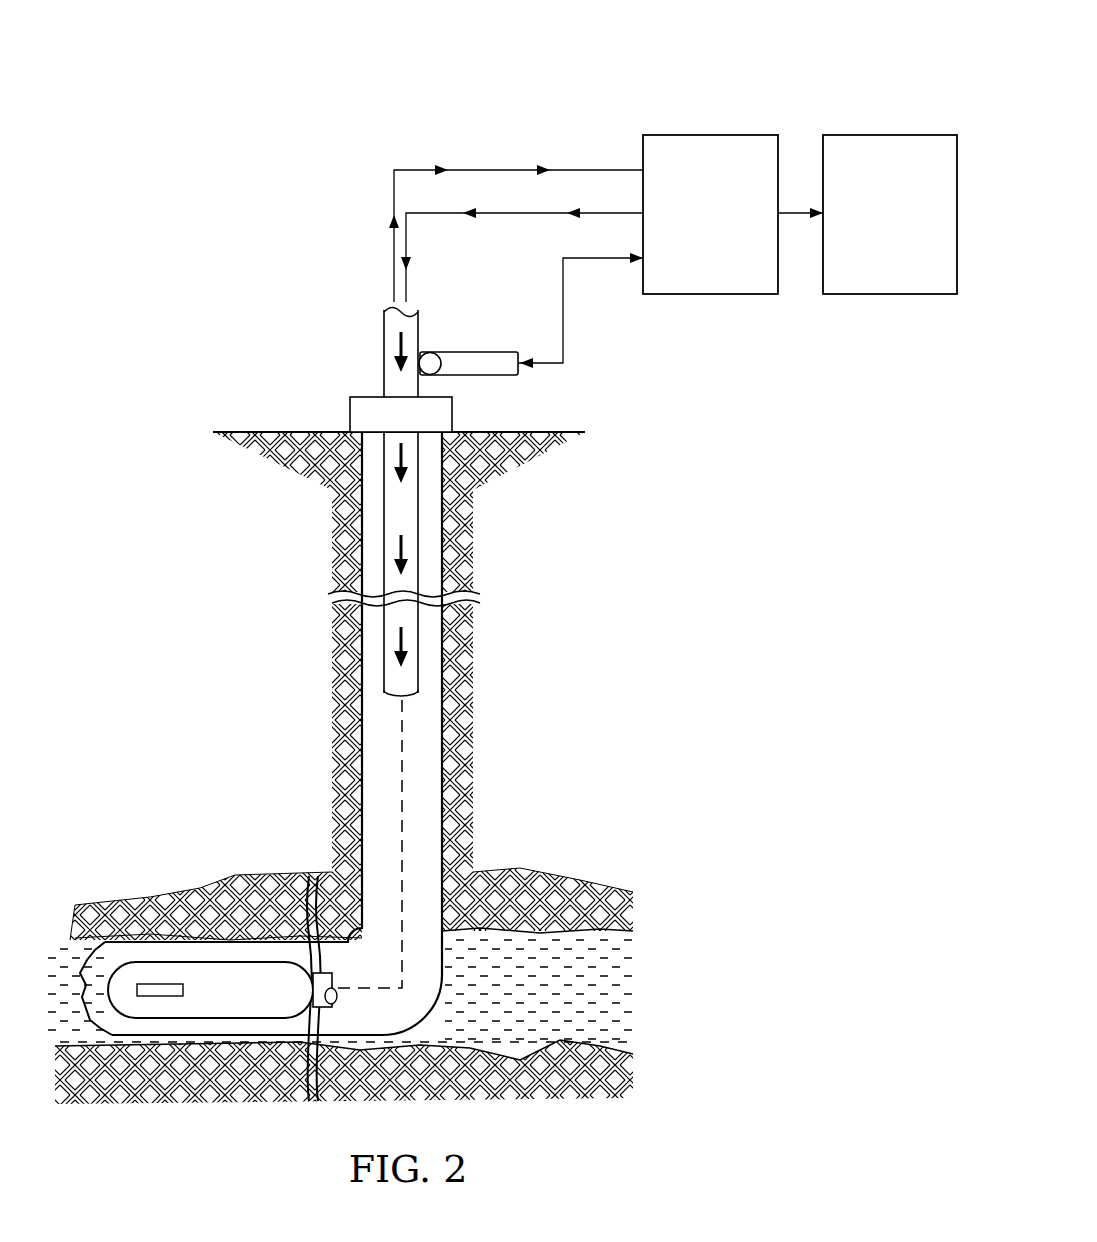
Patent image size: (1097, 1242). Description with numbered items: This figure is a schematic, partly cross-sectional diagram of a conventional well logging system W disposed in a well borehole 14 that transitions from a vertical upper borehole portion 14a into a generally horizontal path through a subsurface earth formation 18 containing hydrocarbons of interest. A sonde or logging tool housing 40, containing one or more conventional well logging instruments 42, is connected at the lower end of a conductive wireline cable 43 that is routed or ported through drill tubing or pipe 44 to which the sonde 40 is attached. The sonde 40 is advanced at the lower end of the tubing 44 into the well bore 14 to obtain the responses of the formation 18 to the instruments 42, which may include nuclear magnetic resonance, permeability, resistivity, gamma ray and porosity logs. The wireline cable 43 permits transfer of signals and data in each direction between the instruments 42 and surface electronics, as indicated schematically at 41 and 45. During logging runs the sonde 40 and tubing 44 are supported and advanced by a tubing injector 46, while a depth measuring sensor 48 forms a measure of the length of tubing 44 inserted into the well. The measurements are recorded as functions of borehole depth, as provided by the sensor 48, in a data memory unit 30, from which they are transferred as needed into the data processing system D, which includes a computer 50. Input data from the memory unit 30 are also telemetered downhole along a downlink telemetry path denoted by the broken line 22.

The data processing system D is at (800, 149).
The data memory unit 30 is at (710, 135).
The computer 50 is at (891, 135).
The surface electronics signal path 41 is at (490, 168).
The surface electronics signal path 45 is at (513, 215).
The depth measuring sensor 48 is at (473, 352).
The tubing injector 46 is at (350, 413).
The upper borehole portion 14a is at (395, 518).
The drill tubing or pipe 44 is at (421, 665).
The well logging system W is at (498, 718).
The downlink telemetry path 22 is at (403, 765).
The subsurface earth formation 18 is at (244, 870).
The borehole 14 is at (128, 955).
The well logging instruments 42 is at (158, 987).
The conductive wireline cable 43 is at (336, 996).
The sonde or logging tool housing 40 is at (252, 999).